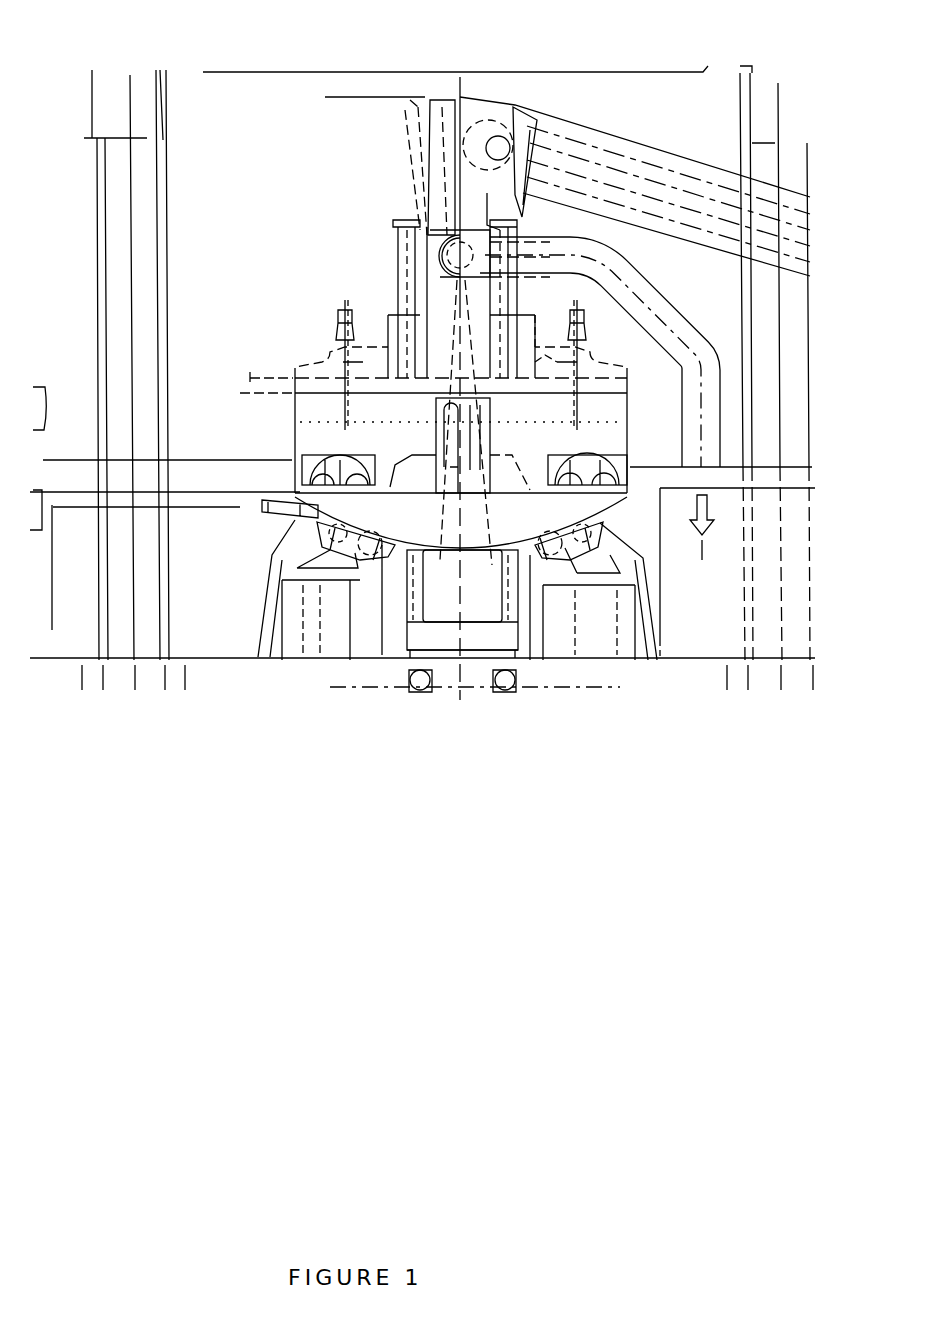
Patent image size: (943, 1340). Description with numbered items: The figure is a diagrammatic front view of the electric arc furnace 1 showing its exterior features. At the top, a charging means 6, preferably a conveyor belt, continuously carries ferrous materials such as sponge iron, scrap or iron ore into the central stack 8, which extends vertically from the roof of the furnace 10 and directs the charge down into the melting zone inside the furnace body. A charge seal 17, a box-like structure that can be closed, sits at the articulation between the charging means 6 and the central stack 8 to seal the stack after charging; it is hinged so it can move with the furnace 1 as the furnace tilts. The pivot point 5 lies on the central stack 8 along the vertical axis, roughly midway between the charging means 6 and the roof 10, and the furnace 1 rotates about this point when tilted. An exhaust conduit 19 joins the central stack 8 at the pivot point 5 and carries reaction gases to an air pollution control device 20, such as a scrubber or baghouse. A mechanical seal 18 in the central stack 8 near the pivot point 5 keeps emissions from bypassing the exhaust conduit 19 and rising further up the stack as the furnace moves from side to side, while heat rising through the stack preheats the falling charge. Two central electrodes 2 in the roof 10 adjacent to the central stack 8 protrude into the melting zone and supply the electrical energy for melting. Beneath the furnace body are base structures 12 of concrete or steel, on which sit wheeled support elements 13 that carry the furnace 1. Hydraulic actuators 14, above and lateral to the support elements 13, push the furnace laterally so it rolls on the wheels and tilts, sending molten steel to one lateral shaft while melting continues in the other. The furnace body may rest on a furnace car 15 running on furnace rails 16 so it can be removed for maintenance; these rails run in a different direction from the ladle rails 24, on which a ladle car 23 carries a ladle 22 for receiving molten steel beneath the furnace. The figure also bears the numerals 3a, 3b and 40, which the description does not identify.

The electric arc furnace 1 is at (395, 408).
The central electrodes 2 is at (408, 277).
The left column bolt 3a is at (343, 338).
The right column bolt 3b is at (582, 340).
The pivot point 5 is at (458, 253).
The charging means 6 is at (643, 173).
The central stack 8 is at (447, 320).
The roof of the furnace 10 is at (543, 355).
The base structures 12 is at (448, 670).
The support elements 13 is at (352, 630).
The hydraulic actuators 14 is at (283, 510).
The furnace car 15 is at (317, 463).
The furnace rails 16 is at (187, 488).
The charge seal 17 is at (437, 146).
The mechanical seal 18 is at (453, 240).
The exhaust conduit 19 is at (652, 297).
The air pollution control device 20 is at (717, 573).
The ladle 22 is at (493, 600).
The ladle car 23 is at (455, 634).
The ladle rails 24 is at (415, 654).
The rotating discs 40 is at (360, 556).